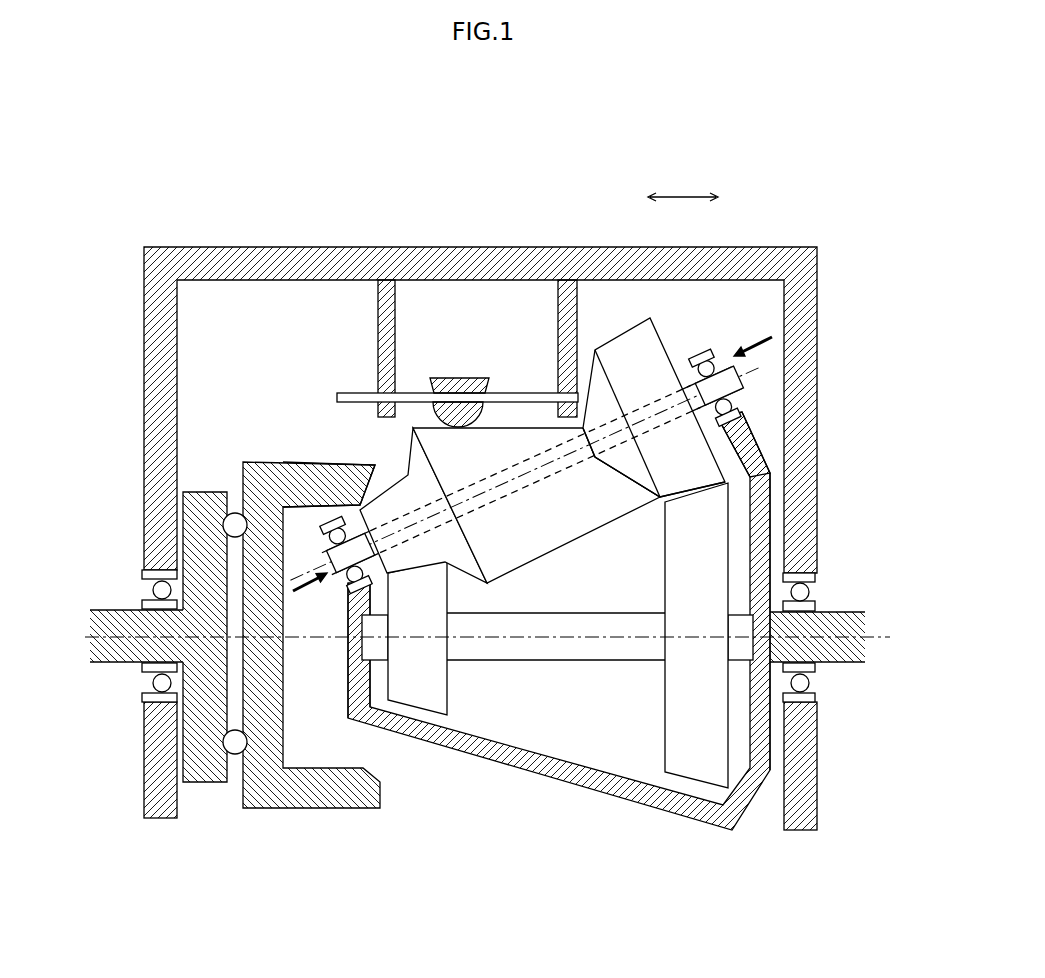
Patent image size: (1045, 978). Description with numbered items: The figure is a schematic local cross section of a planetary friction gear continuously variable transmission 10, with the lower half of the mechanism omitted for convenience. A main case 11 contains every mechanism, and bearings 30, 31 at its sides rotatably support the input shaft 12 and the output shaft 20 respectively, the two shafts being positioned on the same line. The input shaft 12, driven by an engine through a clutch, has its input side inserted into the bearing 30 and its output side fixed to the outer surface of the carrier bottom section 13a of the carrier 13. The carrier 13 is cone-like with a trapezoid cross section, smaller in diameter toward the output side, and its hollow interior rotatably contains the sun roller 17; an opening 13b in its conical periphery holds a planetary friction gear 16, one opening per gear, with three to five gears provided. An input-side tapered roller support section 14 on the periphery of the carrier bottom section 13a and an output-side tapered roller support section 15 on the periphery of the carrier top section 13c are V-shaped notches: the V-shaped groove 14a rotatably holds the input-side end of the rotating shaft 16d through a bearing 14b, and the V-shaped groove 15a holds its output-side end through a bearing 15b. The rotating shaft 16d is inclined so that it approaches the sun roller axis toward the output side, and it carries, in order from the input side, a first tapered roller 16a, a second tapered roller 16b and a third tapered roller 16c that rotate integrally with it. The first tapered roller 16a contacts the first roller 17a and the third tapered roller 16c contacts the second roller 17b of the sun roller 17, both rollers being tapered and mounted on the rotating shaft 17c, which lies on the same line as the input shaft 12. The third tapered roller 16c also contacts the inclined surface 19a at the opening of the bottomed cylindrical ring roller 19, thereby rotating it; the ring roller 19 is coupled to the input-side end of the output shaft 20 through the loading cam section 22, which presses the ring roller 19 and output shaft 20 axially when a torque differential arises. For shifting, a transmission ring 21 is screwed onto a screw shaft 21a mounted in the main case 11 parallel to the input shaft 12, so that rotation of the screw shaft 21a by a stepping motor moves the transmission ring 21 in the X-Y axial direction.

The planetary friction gear continuously variable transmission 10 is at (470, 186).
The main case 11 is at (331, 256).
The input shaft 12 is at (838, 665).
The carrier 13 is at (588, 648).
The carrier bottom section 13a is at (774, 489).
The opening 13b is at (586, 488).
The carrier top section 13c is at (346, 672).
The input-side tapered roller support section 14 is at (771, 357).
The V-shaped groove 14a is at (754, 411).
The bearing 14b is at (703, 352).
The output-side tapered roller support section 15 is at (322, 553).
The V-shaped groove 15a is at (340, 596).
The bearing 15b is at (332, 516).
The planetary friction gear 16 is at (524, 449).
The first tapered roller 16a is at (658, 468).
The second tapered roller 16b is at (512, 566).
The third tapered roller 16c is at (400, 490).
The rotating shaft 16d is at (684, 364).
The sun roller 17 is at (557, 635).
The first roller 17a is at (662, 692).
The second roller 17b is at (447, 675).
The rotating shaft 17c is at (546, 662).
The ring roller 19 is at (306, 810).
The inclined surface 19a is at (352, 478).
The output shaft 20 is at (103, 664).
The transmission ring 21 is at (455, 378).
The screw shaft 21a is at (356, 392).
The loading cam section 22 is at (237, 812).
The bearing 30 is at (812, 575).
The bearing 31 is at (142, 575).